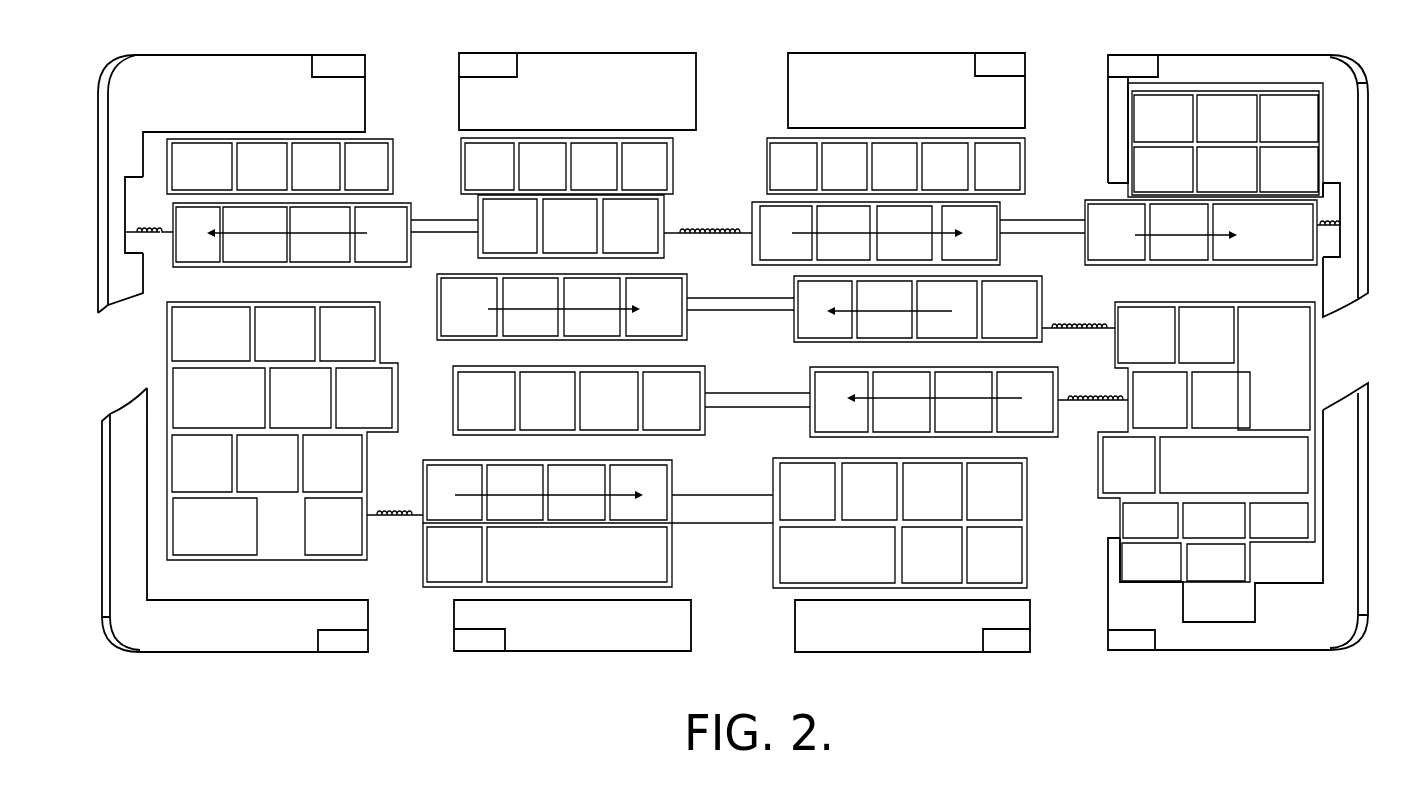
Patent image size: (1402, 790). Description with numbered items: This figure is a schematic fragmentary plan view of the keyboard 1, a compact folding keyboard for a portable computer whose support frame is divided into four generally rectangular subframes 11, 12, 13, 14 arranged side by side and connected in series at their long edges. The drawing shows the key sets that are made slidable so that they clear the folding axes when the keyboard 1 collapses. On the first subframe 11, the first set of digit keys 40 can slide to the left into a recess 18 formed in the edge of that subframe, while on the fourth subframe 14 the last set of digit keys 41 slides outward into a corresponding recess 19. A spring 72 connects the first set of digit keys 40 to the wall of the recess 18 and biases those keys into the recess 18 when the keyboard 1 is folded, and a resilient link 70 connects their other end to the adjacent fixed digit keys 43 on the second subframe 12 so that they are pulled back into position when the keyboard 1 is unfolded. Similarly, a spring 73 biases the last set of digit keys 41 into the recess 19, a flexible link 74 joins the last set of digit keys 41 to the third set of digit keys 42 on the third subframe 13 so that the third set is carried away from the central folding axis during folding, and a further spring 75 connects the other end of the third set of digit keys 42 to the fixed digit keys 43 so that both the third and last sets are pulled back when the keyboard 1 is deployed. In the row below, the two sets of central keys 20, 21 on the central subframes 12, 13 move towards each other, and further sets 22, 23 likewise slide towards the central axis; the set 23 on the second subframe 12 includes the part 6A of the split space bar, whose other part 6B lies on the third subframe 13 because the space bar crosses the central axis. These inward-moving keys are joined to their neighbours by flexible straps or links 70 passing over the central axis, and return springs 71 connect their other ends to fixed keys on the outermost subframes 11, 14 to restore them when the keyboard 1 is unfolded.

The keyboard 1 is at (443, 682).
The first subframe 11 is at (237, 633).
The second subframe 12 is at (603, 633).
The third subframe 13 is at (877, 632).
The fourth subframe 14 is at (1178, 637).
The recess 18 is at (125, 207).
The recess 19 is at (1333, 203).
The set of central keys 20 is at (667, 293).
The set of central keys 21 is at (793, 327).
The set of keys 22 is at (802, 423).
The set of keys 23 is at (637, 472).
The space bar part 6A is at (638, 555).
The space bar part 6B is at (805, 557).
The first set of digit keys 40 is at (320, 248).
The last set of digit keys 41 is at (1100, 242).
The third set of digit keys 42 is at (765, 215).
The fixed digit keys 43 is at (497, 210).
The flexible straps or links 70 is at (423, 228).
The return springs 71 is at (1067, 325).
The spring 72 is at (152, 238).
The spring 73 is at (1327, 227).
The flexible link 74 is at (1025, 225).
The spring 75 is at (692, 237).